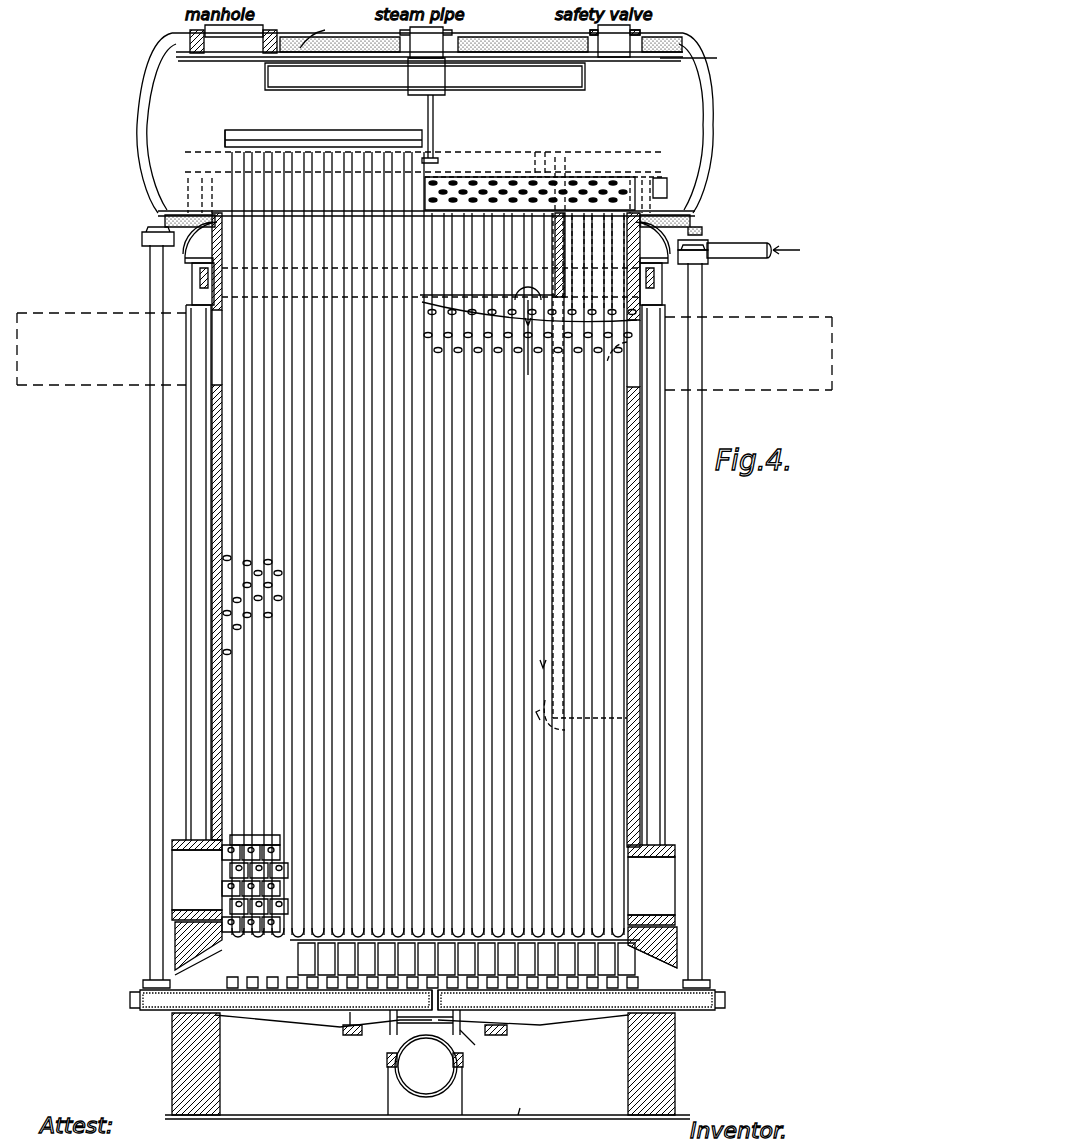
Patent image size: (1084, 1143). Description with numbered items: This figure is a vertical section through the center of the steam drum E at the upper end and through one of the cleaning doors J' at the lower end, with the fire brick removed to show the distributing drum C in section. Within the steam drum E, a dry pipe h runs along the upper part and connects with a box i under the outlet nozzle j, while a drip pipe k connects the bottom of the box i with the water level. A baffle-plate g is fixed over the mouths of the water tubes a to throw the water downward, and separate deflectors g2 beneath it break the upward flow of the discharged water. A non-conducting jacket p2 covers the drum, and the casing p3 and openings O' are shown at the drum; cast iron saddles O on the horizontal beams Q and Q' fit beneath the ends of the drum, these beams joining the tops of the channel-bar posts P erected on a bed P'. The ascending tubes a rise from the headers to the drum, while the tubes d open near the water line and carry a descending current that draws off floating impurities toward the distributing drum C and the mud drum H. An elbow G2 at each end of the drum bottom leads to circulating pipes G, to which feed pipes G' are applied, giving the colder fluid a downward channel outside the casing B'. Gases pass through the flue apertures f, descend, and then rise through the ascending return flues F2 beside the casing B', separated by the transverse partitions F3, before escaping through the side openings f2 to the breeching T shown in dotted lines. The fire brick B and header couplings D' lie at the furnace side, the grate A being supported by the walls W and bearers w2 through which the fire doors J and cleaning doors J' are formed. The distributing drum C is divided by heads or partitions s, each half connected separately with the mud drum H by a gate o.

The steam drum E is at (693, 125).
The outlet nozzle j is at (426, 42).
The box i is at (426, 76).
The dry pipe h is at (585, 82).
The drip pipe k is at (425, 117).
The pipe p3 is at (701, 55).
The non-conducting jacket p2 is at (724, 226).
The baffle-plate g is at (258, 135).
The deflectors g2 is at (228, 150).
The perforated plate O' is at (530, 170).
The cast iron saddles O is at (669, 179).
The water tubes a is at (235, 163).
The tubes d is at (247, 768).
The flue apertures f is at (502, 298).
The side openings f2 is at (630, 352).
The casing B' is at (424, 530).
The channel-bar posts P is at (422, 575).
The horizontal beam Q is at (192, 284).
The horizontal beam Q' is at (643, 284).
The breeching T is at (424, 337).
The circulating pipes G is at (430, 607).
The feed pipes G' is at (756, 238).
The elbow G2 is at (712, 243).
The ascending return flues F2 is at (620, 686).
The transverse partitions F3 is at (555, 650).
The fire bricks B is at (237, 883).
The cleaning doors J' is at (423, 882).
The fire doors J is at (426, 956).
The header couplings D' is at (413, 964).
The distributing drum C is at (290, 1025).
The heads or partitions s is at (440, 1003).
The walls W is at (718, 940).
The grate A is at (380, 1035).
The bearers w2 is at (348, 1035).
The mud drum H is at (425, 1062).
The gate o is at (473, 1046).
The bed P' is at (521, 1099).